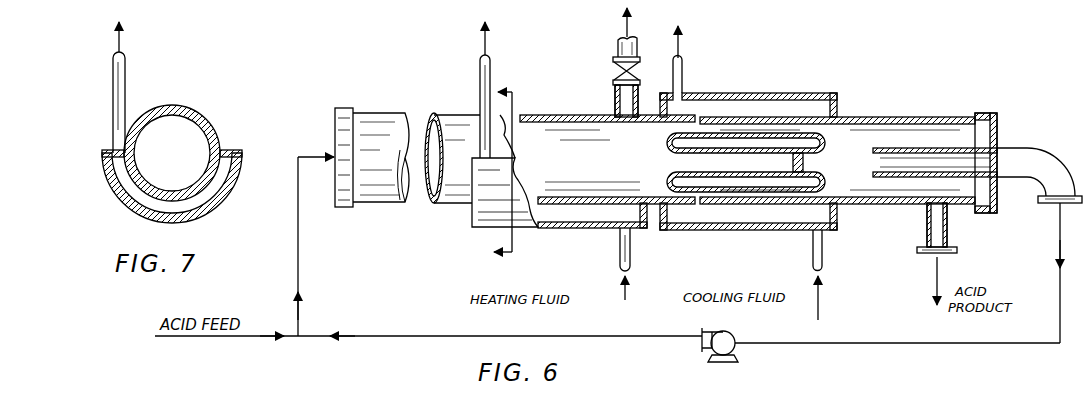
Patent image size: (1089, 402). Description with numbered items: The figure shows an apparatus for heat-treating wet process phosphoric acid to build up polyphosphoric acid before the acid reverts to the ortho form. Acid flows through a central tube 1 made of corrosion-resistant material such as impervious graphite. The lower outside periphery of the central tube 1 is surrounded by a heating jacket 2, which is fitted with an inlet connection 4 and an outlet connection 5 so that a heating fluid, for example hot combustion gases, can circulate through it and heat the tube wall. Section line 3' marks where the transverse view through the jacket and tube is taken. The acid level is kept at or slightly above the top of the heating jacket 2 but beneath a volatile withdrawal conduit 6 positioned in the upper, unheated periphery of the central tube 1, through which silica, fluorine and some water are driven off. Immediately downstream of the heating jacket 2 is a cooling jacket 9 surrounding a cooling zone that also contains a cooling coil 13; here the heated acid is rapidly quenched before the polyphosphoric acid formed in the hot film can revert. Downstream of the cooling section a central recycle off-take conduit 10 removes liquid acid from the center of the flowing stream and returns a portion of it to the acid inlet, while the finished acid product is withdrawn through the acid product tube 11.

In FIG. 6, the central tube 1 is at (443, 203).
In FIG. 7, the heating jacket 2 is at (108, 180).
In FIG. 6, the heating jacket 2 is at (583, 228).
In FIG. 6, the section line 3'- 3' is at (502, 173).
In FIG. 6, the inlet connection 4 is at (630, 253).
In FIG. 7, the outlet connection 5 is at (125, 64).
In FIG. 6, the outlet connection 5 is at (480, 70).
In FIG. 6, the volatile withdrawal conduit 6 is at (614, 87).
In FIG. 6, the cooling jacket 9 is at (753, 93).
In FIG. 6, the central recycle off-take conduit 10 is at (1015, 160).
In FIG. 6, the acid product tube 11 is at (947, 242).
In FIG. 6, the cooling coil 13 is at (820, 150).